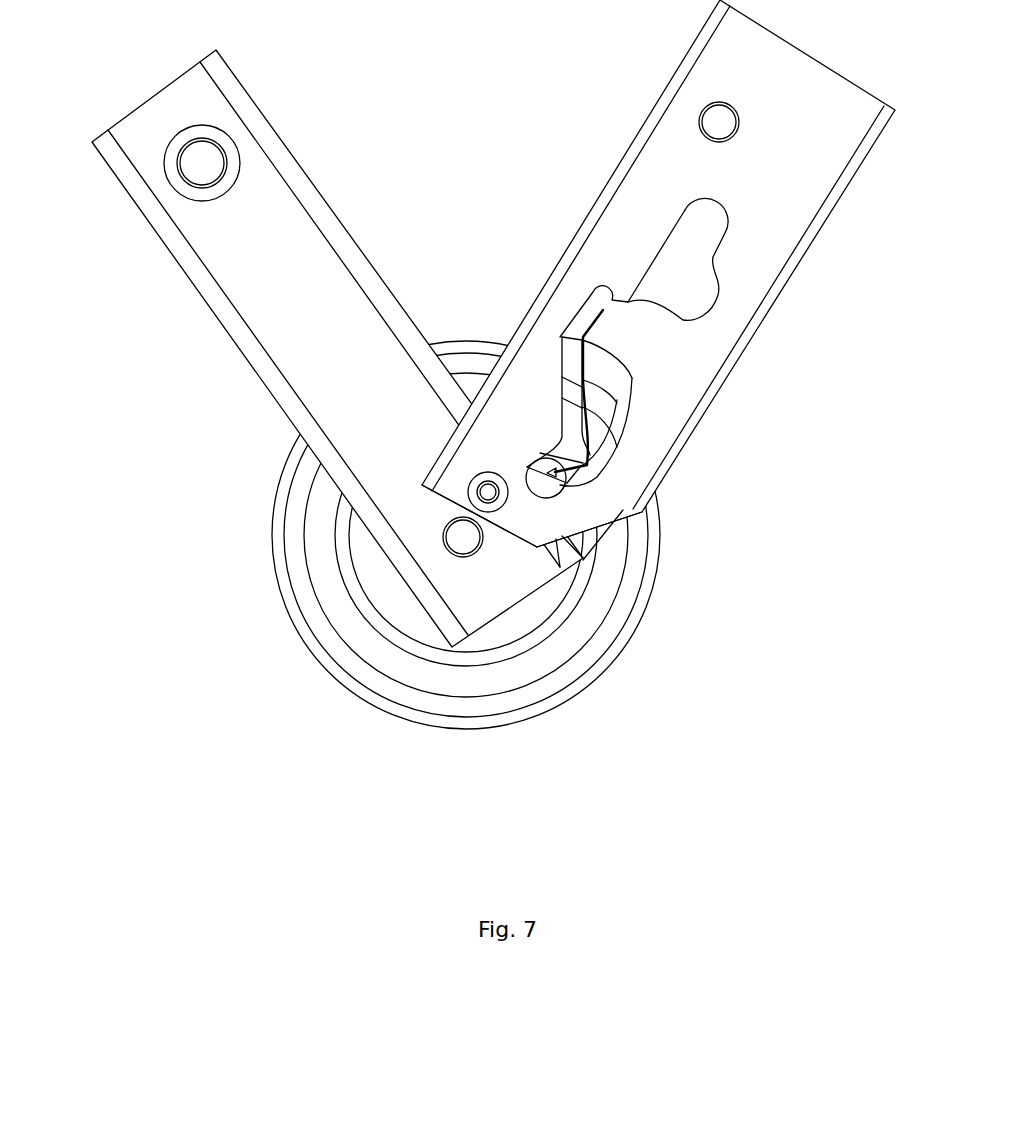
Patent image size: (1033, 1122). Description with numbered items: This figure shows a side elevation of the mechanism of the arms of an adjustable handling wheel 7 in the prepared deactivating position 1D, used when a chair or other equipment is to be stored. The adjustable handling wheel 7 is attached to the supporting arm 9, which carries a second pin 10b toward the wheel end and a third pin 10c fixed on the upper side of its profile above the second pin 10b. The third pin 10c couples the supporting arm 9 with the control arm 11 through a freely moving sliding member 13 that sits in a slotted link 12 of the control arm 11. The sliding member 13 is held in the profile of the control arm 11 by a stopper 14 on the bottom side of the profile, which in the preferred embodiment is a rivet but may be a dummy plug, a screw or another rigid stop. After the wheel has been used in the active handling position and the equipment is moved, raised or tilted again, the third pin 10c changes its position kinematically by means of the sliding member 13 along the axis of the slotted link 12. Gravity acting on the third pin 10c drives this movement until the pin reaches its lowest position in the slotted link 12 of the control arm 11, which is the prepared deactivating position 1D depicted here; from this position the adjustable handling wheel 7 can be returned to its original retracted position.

The prepared deactivating position 1D is at (510, 438).
The adjustable handling wheel 7 is at (280, 578).
The supporting arm 9 is at (255, 284).
The second pin 10b is at (464, 537).
The third pin 10c is at (554, 481).
The control arm 11 is at (661, 383).
The slotted link 12 is at (721, 290).
The sliding member 13 is at (627, 330).
The stopper 14 is at (493, 493).